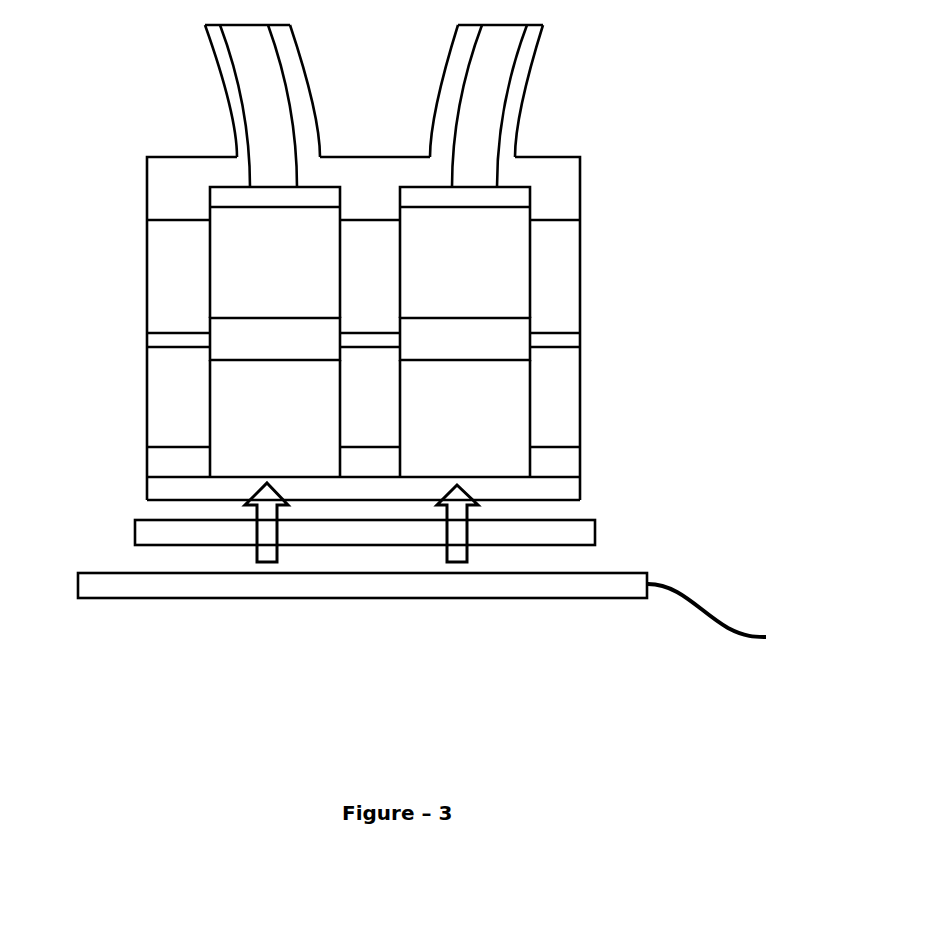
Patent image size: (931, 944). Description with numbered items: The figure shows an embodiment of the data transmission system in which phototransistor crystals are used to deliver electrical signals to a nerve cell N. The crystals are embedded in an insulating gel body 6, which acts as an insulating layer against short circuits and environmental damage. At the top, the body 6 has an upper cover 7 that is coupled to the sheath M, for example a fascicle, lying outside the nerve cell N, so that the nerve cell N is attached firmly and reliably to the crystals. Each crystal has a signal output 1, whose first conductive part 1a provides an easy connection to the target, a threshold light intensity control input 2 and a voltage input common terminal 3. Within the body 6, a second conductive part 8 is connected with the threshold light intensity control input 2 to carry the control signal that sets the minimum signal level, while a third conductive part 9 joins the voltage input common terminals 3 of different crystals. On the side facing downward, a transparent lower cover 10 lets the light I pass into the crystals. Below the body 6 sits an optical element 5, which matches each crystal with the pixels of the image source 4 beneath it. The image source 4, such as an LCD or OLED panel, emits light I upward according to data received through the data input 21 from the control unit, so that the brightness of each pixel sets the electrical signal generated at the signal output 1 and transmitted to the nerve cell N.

The signal output 1 is at (518, 252).
The first conductive part 1a is at (258, 200).
The threshold light intensity control input 2 is at (512, 342).
The voltage input common terminal 3 is at (512, 418).
The image source 4 is at (553, 590).
The optical element 5 is at (582, 528).
The body 6 is at (168, 252).
The upper cover 7 is at (567, 190).
The second conductive part 8 is at (168, 340).
The third conductive part 9 is at (168, 467).
The lower cover 10 is at (568, 490).
The data input 21 is at (697, 607).
The light I is at (458, 527).
The sheath M is at (530, 38).
The nerve cell N is at (490, 58).